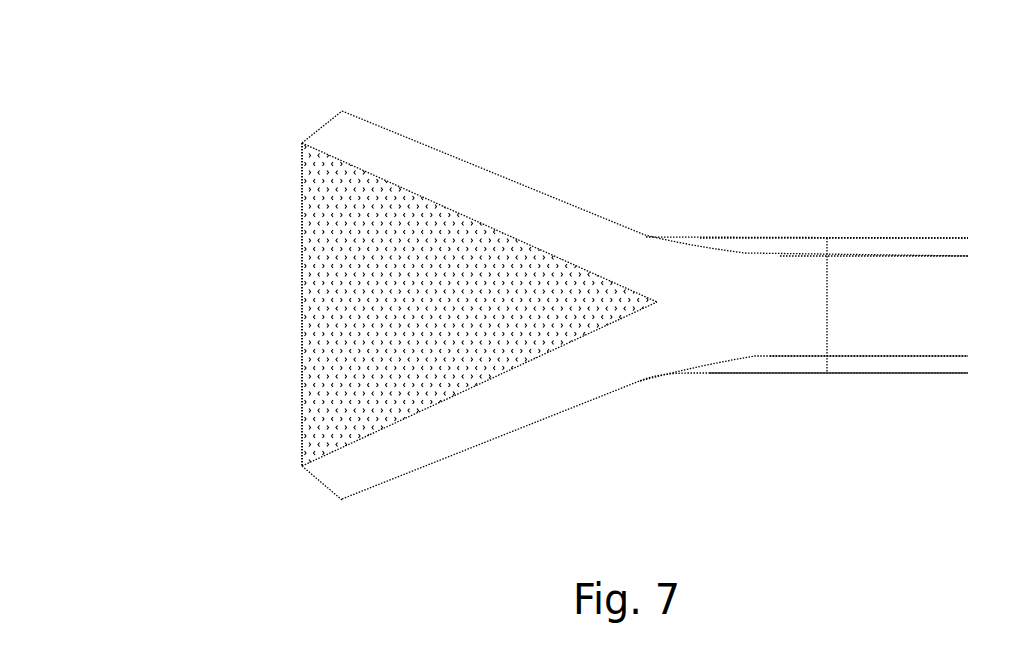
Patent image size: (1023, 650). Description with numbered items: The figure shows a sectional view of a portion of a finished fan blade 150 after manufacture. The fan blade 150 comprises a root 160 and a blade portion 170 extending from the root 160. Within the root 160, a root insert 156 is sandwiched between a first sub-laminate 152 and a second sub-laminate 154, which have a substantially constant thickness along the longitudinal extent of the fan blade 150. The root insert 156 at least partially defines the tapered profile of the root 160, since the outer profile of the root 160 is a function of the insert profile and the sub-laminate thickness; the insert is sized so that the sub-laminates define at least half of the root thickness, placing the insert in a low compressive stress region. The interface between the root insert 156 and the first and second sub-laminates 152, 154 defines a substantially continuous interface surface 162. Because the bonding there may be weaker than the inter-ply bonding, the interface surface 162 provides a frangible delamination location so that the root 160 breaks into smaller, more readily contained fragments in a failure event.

The fan blade 150 is at (213, 49).
The first sub-laminate 152 is at (635, 453).
The second sub-laminate 154 is at (635, 164).
The root insert 156 is at (302, 257).
The root 160 is at (447, 146).
The interface surface 162 is at (375, 437).
The blade portion 170 is at (927, 268).